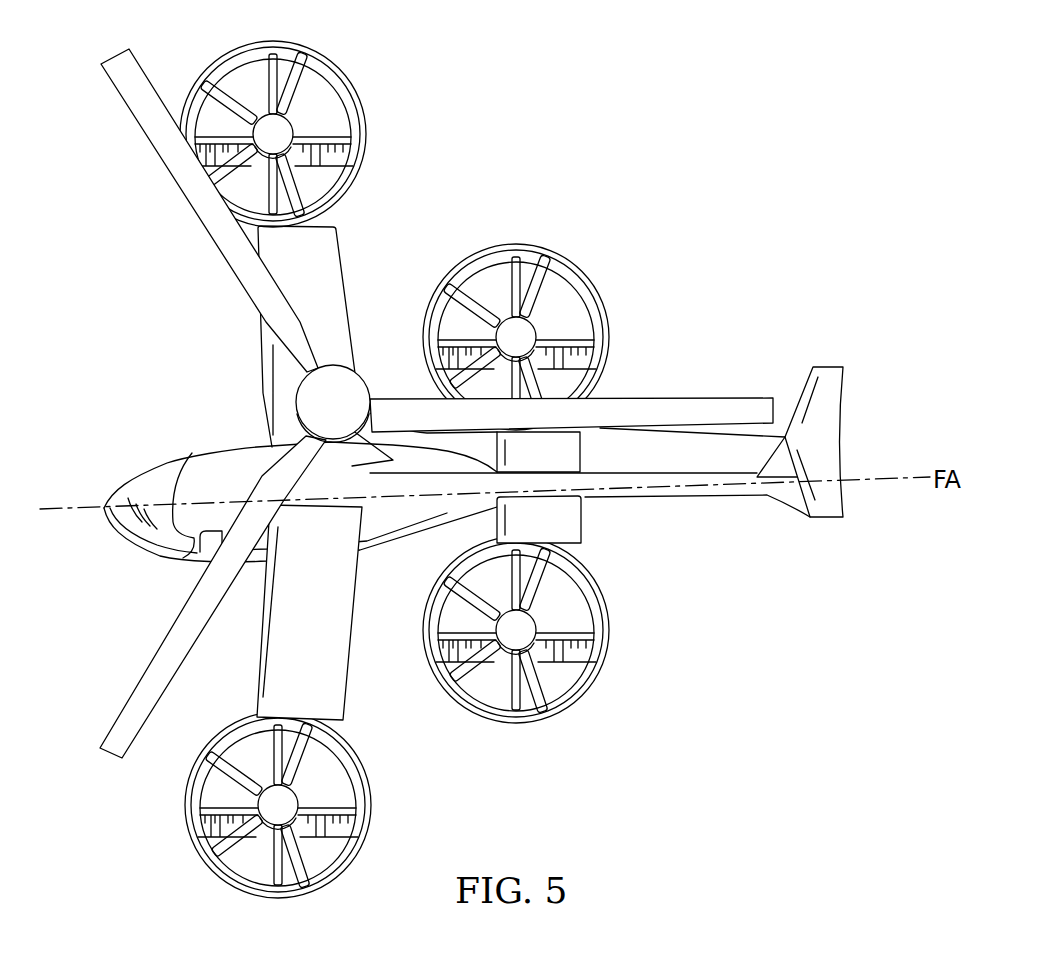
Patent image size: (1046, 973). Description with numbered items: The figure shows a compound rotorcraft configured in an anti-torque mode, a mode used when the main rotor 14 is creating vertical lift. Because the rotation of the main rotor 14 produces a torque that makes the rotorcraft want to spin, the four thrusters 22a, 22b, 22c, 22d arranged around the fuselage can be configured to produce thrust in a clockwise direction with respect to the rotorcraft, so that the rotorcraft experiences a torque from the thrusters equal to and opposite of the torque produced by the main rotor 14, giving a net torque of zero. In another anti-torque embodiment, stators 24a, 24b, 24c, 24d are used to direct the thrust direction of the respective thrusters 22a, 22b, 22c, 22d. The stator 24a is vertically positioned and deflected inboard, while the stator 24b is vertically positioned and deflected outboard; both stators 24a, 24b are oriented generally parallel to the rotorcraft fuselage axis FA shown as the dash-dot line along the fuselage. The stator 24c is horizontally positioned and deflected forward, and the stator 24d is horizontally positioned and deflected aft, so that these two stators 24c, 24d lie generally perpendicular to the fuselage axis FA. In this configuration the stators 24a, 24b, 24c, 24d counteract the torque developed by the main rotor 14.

The main rotor 14 is at (307, 398).
The thruster 22a is at (568, 262).
The thruster 22b is at (613, 632).
The thruster 22c is at (373, 812).
The thruster 22d is at (367, 145).
The stator 24a is at (580, 368).
The stator 24b is at (582, 665).
The stator 24c is at (238, 875).
The stator 24d is at (258, 82).